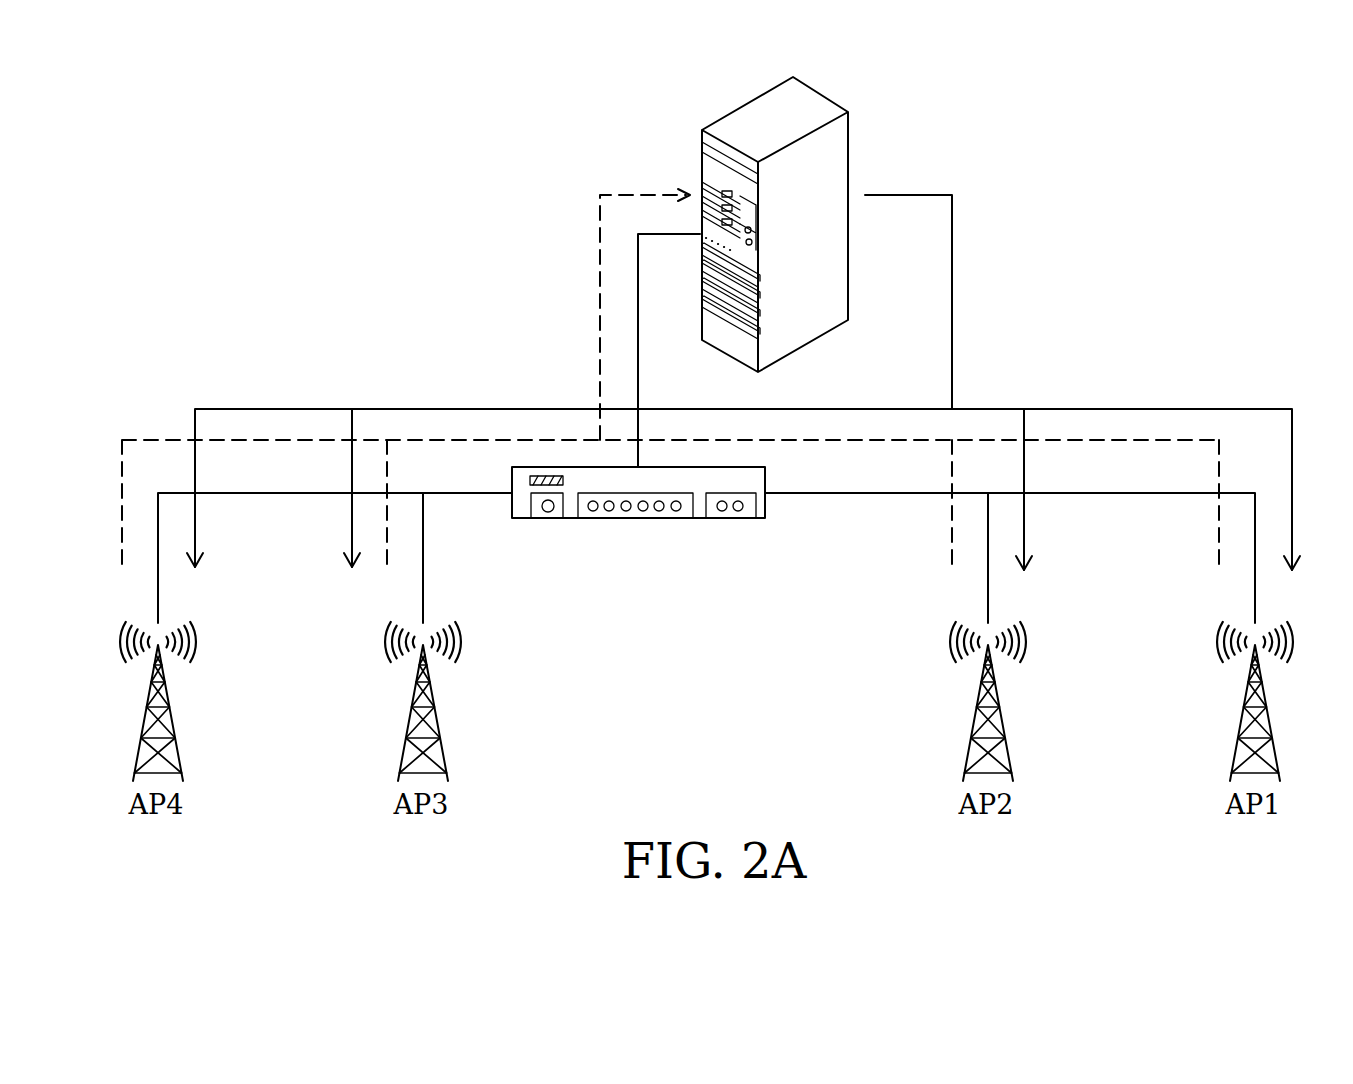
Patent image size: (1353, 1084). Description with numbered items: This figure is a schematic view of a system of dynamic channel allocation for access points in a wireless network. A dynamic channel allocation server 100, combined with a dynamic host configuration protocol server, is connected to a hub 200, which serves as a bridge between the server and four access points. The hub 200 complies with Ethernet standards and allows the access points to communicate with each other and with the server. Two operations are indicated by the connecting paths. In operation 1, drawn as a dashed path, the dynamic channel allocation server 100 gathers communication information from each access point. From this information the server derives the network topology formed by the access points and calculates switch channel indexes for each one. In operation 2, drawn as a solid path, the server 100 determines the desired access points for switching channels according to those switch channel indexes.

The dynamic channel allocation server 100 is at (848, 145).
The hub 200 is at (639, 520).
The operation 1 is at (600, 303).
The operation 2 is at (952, 302).